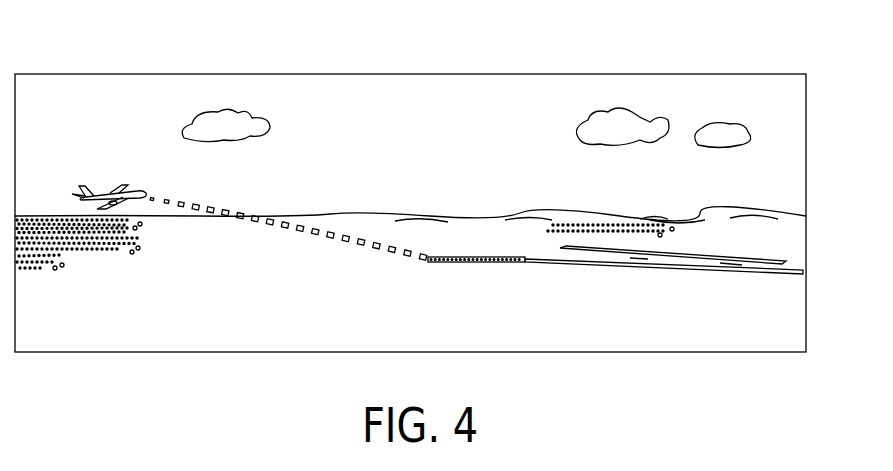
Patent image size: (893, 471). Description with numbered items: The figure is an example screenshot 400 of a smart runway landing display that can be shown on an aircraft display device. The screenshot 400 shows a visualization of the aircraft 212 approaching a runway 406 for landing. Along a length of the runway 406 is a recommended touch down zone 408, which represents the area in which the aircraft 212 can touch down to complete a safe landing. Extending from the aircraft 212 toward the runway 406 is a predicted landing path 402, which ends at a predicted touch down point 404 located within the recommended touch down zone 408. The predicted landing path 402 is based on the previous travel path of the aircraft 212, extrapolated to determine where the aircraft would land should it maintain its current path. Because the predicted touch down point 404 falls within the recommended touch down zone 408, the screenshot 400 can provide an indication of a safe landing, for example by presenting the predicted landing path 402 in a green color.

The screenshot 400 is at (110, 46).
The aircraft 212 is at (136, 189).
The predicted landing path 402 is at (298, 236).
The predicted touch down point 404 is at (426, 263).
The runway 406 is at (582, 265).
The recommended touch down zone 408 is at (490, 263).